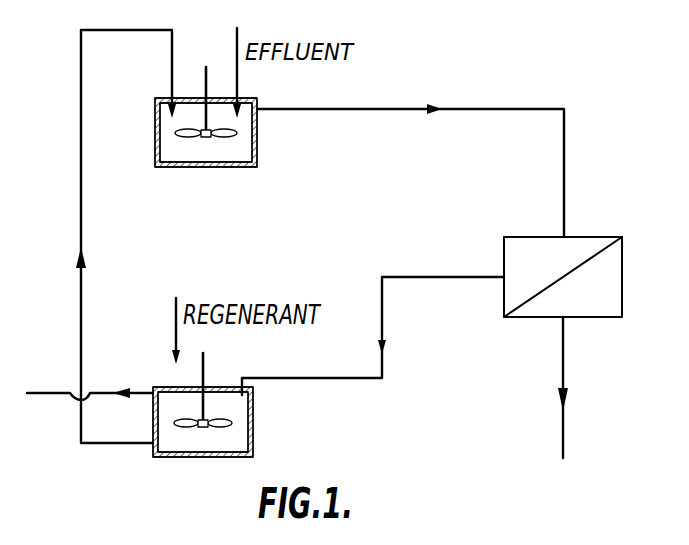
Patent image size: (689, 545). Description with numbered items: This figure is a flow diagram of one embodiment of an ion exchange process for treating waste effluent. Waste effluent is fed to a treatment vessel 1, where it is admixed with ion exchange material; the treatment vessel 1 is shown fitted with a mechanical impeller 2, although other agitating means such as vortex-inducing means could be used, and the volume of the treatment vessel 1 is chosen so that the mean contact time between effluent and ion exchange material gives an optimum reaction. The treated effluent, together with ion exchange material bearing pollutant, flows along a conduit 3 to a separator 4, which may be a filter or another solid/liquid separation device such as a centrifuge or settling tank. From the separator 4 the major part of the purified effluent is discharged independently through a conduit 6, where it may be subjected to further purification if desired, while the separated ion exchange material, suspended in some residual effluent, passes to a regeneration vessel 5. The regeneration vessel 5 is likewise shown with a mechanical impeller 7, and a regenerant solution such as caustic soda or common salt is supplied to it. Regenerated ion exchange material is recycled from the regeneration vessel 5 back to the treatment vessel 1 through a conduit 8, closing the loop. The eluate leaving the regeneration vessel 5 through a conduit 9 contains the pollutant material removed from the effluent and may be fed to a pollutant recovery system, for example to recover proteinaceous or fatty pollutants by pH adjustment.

The treatment vessel 1 is at (257, 135).
The mechanical impeller 2 is at (222, 137).
The conduit 3 is at (470, 108).
The separator 4 is at (533, 236).
The regeneration vessel 5 is at (253, 417).
The conduit 6 is at (563, 420).
The mechanical impeller 7 is at (218, 427).
The conduit 8 is at (81, 308).
The conduit 9 is at (60, 392).